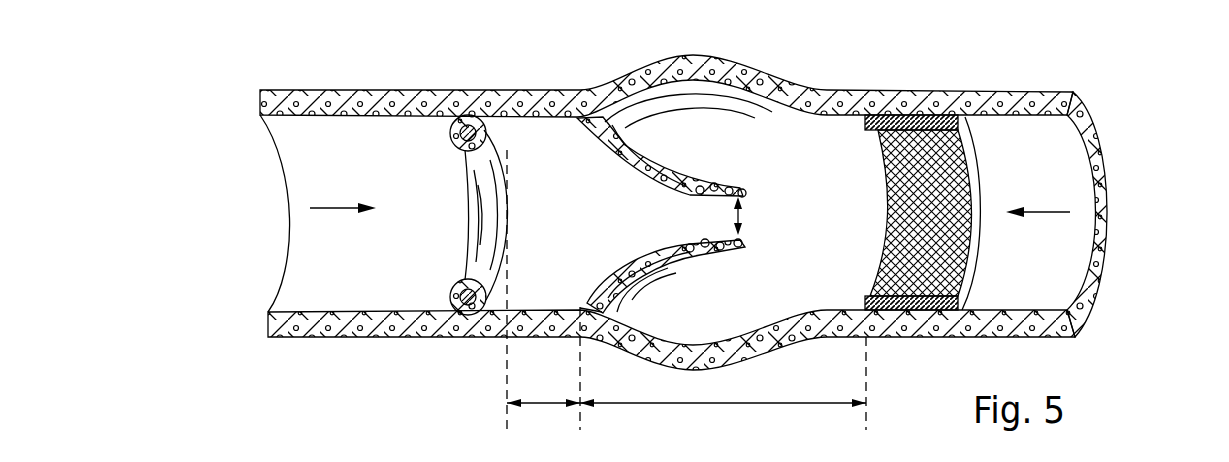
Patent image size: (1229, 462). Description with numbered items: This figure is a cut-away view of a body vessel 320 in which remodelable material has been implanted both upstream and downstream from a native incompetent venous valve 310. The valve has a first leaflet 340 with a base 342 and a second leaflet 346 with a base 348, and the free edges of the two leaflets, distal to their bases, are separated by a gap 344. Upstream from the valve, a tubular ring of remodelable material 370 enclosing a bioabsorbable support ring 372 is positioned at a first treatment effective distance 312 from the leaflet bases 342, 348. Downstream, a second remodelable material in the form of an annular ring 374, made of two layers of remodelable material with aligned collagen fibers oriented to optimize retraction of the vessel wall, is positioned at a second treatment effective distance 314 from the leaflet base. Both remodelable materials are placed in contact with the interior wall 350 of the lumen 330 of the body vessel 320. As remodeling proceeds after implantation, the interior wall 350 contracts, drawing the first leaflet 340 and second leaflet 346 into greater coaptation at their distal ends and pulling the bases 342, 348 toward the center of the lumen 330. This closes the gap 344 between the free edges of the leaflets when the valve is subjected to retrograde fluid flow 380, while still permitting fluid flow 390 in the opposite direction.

The native incompetent venous valve 310 is at (404, 376).
The first treatment effective distance 312 is at (538, 403).
The second treatment effective distance 314 is at (813, 402).
The body vessel 320 is at (298, 90).
The lumen 330 is at (1065, 132).
The first leaflet 340 is at (627, 127).
The base of the first leaflet 342 is at (587, 100).
The gap 344 is at (742, 218).
The second leaflet 346 is at (636, 260).
The base of the second leaflet 348 is at (582, 305).
The interior wall 350 is at (360, 98).
The tubular ring of remodelable material 370 is at (423, 93).
The bioabsorbable support ring 372 is at (480, 90).
The annular ring 374 is at (910, 115).
The retrograde fluid flow 380 is at (1067, 213).
The fluid flow 390 is at (323, 212).